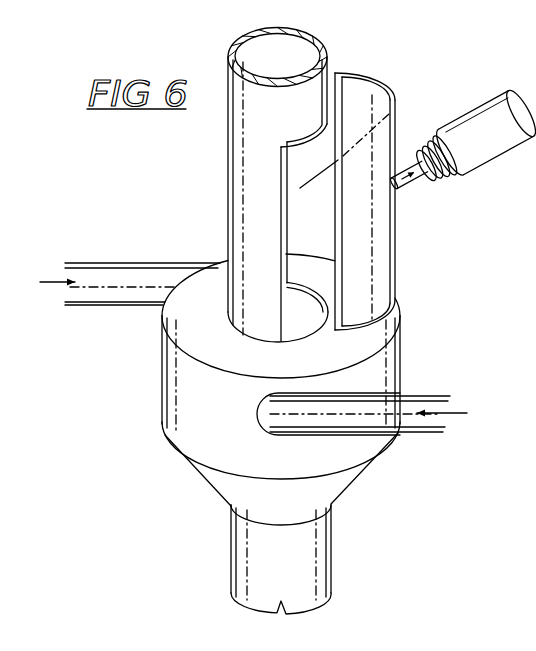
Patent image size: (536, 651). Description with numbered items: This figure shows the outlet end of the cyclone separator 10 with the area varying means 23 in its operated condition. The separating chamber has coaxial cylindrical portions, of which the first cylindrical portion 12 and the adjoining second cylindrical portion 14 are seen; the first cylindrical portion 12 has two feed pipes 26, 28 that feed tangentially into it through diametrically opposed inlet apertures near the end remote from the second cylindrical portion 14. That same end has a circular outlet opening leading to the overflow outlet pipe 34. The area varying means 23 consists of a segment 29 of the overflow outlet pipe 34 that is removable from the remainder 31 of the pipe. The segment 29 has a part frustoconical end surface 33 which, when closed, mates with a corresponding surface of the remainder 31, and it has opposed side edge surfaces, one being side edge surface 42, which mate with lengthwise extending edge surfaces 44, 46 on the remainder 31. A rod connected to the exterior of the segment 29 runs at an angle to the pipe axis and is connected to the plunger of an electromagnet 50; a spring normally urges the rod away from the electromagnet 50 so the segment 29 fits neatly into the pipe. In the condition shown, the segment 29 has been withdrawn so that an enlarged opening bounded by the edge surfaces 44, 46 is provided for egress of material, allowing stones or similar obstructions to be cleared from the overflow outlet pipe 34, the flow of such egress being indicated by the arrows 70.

The separator 10 is at (364, 463).
The first cylindrical portion 12 is at (326, 486).
The second cylindrical portion 14 is at (317, 563).
The area varying means 23 is at (319, 172).
The feed pipe 26 is at (126, 292).
The feed pipe 28 is at (410, 426).
The segment 29 is at (383, 190).
The remainder of the pipe 31 is at (228, 204).
The part frustoconical end surface 33 is at (366, 72).
The overflow outlet pipe 34 is at (245, 151).
The side edge surface 42 is at (346, 223).
The lengthwise extending edge surface 44 is at (285, 236).
The lengthwise extending edge surface 46 is at (279, 214).
The electromagnet 50 is at (489, 150).
The arrows 70 is at (396, 109).